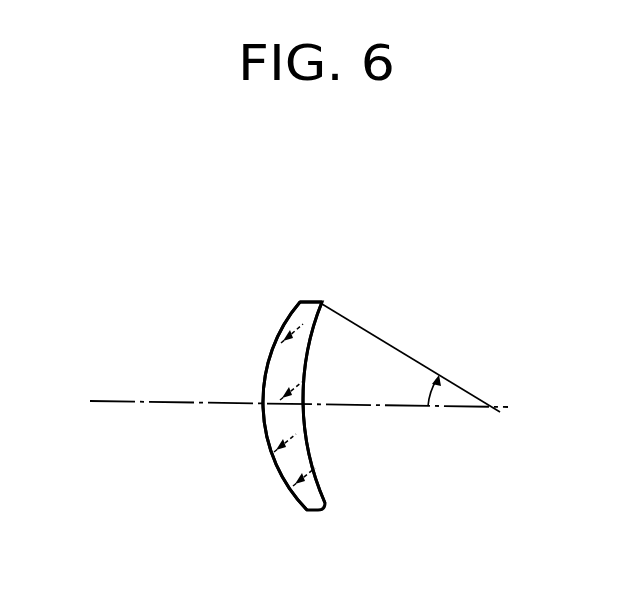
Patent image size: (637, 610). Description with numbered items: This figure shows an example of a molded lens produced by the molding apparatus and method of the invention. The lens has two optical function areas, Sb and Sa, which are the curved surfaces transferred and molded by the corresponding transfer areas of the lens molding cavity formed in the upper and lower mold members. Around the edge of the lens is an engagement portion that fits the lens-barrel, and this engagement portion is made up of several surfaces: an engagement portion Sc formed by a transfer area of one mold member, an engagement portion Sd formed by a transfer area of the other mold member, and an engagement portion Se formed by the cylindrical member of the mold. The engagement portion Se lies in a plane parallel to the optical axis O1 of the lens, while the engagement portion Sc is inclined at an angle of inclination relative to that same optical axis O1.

The optical function area Sa is at (311, 354).
The optical function area Sb is at (273, 347).
The engagement portion Sc is at (322, 303).
The engagement portion Sd is at (299, 302).
The engagement portion Se is at (305, 301).
The optical axis O1 is at (282, 371).